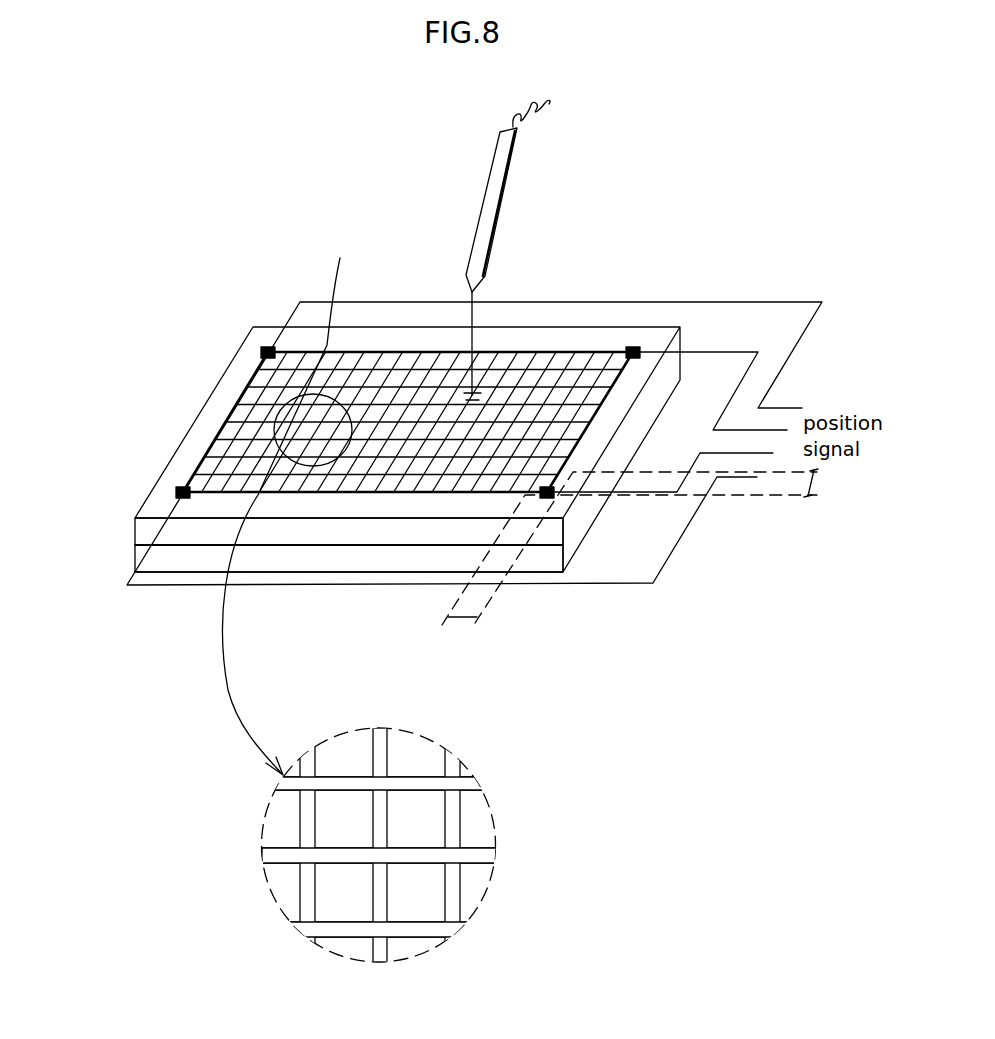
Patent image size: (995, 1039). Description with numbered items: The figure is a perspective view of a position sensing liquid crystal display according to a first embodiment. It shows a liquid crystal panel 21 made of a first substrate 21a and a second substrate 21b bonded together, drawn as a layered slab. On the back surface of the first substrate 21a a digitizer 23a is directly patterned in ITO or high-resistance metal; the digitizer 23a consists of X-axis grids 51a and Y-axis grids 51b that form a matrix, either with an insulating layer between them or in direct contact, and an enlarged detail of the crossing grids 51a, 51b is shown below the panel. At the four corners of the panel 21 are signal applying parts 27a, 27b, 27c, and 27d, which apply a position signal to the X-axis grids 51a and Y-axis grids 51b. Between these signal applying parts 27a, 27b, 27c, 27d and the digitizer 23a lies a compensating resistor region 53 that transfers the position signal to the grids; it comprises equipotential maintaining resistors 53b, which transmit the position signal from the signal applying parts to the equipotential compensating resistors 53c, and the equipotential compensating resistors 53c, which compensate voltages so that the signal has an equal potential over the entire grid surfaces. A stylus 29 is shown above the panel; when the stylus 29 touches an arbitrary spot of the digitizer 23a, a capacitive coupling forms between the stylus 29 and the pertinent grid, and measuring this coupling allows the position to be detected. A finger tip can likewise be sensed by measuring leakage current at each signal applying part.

The liquid crystal panel 21 is at (157, 481).
The first substrate 21a is at (155, 532).
The second substrate 21b is at (155, 561).
The digitizer 23a is at (270, 422).
The signal applying part 27a is at (266, 348).
The signal applying part 27b is at (640, 352).
The signal applying part 27c is at (184, 497).
The signal applying part 27d is at (552, 495).
The stylus 29 is at (501, 192).
The X-axis grids 51a is at (544, 778).
The Y-axis grids 51b is at (297, 385).
The compensating resistor region 53 is at (648, 558).
The equipotential maintaining resistors 53b is at (531, 354).
The equipotential compensating resistors 53c is at (588, 357).